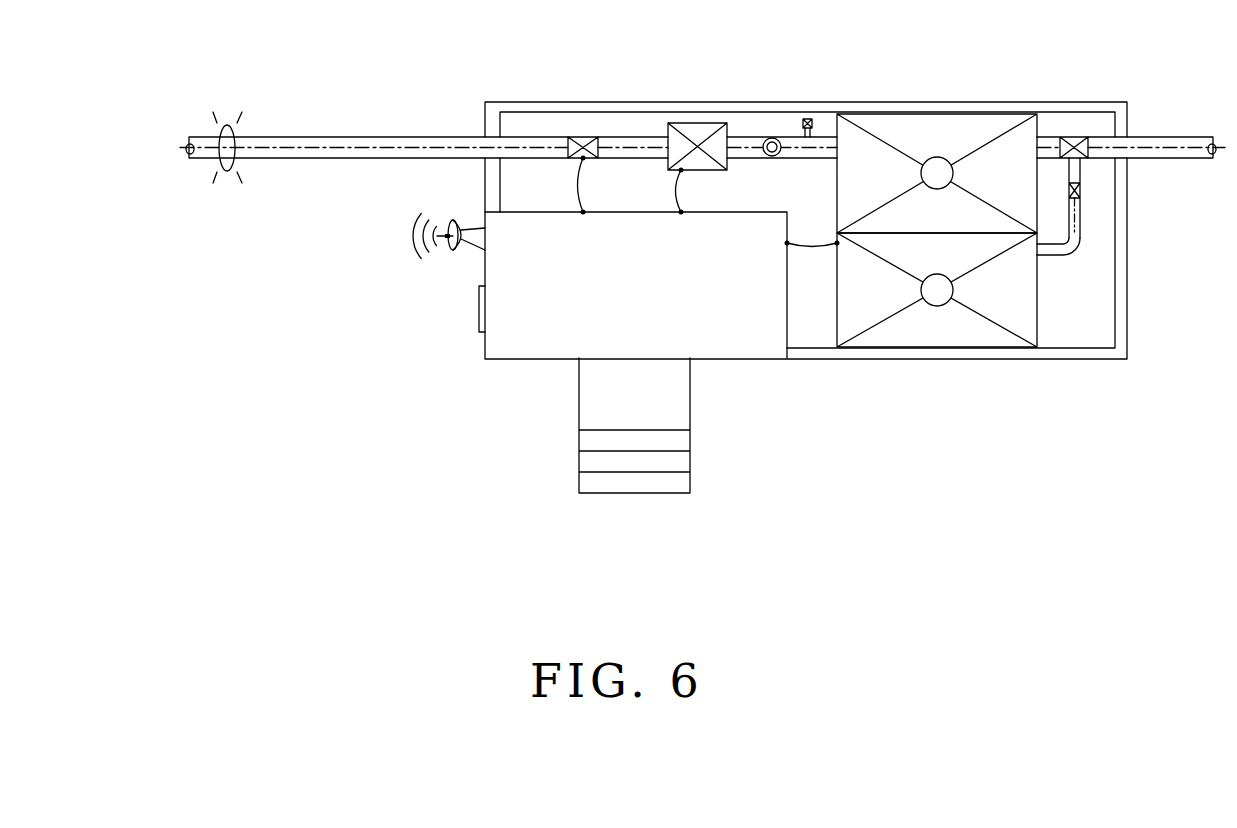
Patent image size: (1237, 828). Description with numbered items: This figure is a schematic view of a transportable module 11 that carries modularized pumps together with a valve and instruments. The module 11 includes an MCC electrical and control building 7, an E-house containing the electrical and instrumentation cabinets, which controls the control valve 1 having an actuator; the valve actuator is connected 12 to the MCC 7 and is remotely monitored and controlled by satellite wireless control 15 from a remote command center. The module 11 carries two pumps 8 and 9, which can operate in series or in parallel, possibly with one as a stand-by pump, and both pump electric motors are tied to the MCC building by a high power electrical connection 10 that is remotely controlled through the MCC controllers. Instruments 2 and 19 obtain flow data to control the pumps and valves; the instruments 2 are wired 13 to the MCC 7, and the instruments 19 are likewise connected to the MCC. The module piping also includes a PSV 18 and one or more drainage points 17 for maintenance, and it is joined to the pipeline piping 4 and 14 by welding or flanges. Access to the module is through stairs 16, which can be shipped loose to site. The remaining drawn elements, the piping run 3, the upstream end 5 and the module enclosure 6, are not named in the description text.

The control valve 1 is at (697, 123).
The instrument 2 is at (583, 137).
The main pipeline 3 is at (634, 136).
The pipeline piping 4 is at (427, 136).
The water source connection 5 is at (329, 136).
The housing 6 is at (775, 110).
The MCC 7 is at (563, 342).
The pump 8 is at (945, 133).
The pump 9 is at (951, 335).
The connection 10 is at (812, 246).
The transportable module 11 is at (757, 187).
The connection 12 is at (676, 194).
The wiring 13 is at (578, 194).
The pipeline piping 14 is at (1159, 137).
The satellite wireless control 15 is at (451, 249).
The stairs 16 is at (690, 422).
The drainage point 17 is at (810, 119).
The PSV 18 is at (778, 155).
The instrument 19 is at (1075, 137).